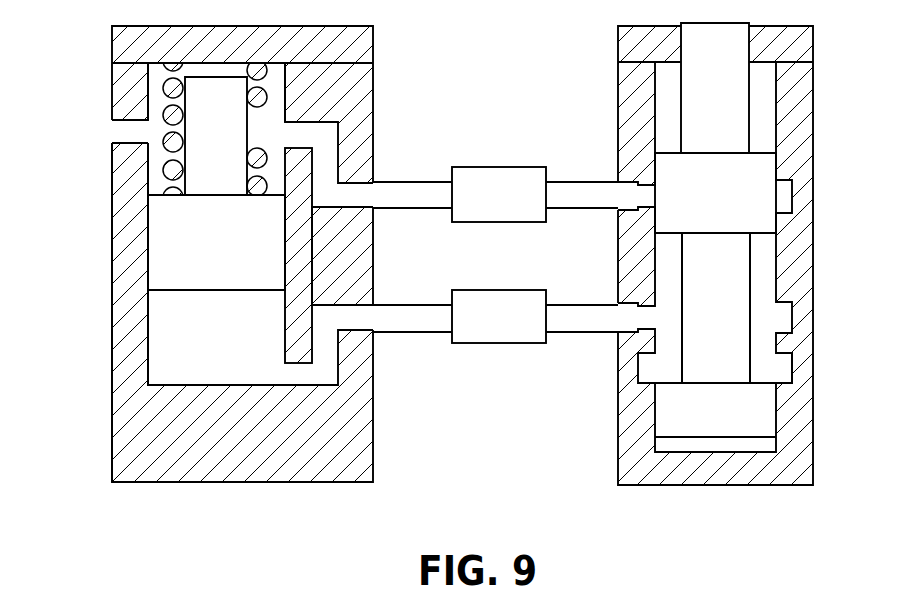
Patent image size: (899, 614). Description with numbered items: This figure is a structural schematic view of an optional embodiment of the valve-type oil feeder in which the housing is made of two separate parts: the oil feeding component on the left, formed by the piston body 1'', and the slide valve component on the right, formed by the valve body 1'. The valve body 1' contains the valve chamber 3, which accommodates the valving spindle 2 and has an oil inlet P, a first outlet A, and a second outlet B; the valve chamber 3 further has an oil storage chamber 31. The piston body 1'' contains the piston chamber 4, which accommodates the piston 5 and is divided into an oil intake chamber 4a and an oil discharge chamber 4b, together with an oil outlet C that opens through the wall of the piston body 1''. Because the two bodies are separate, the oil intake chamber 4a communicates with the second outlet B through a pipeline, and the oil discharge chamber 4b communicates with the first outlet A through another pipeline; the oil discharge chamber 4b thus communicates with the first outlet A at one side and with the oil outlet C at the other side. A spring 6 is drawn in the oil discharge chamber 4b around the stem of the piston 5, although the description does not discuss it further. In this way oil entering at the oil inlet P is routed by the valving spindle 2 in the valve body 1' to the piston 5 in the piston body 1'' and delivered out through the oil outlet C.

The piston body 1'' is at (279, 254).
The valve body 1' is at (739, 254).
The valving spindle 2 is at (737, 173).
The valve chamber 3 is at (727, 445).
The oil storage chamber 31 is at (758, 247).
The piston chamber 4 is at (145, 273).
The oil intake chamber 4a is at (167, 362).
The oil discharge chamber 4b is at (160, 152).
The piston 5 is at (185, 220).
The spring 6 is at (250, 63).
The first outlet A is at (495, 194).
The second outlet B is at (495, 316).
The oil outlet C is at (125, 128).
The oil inlet P is at (803, 372).